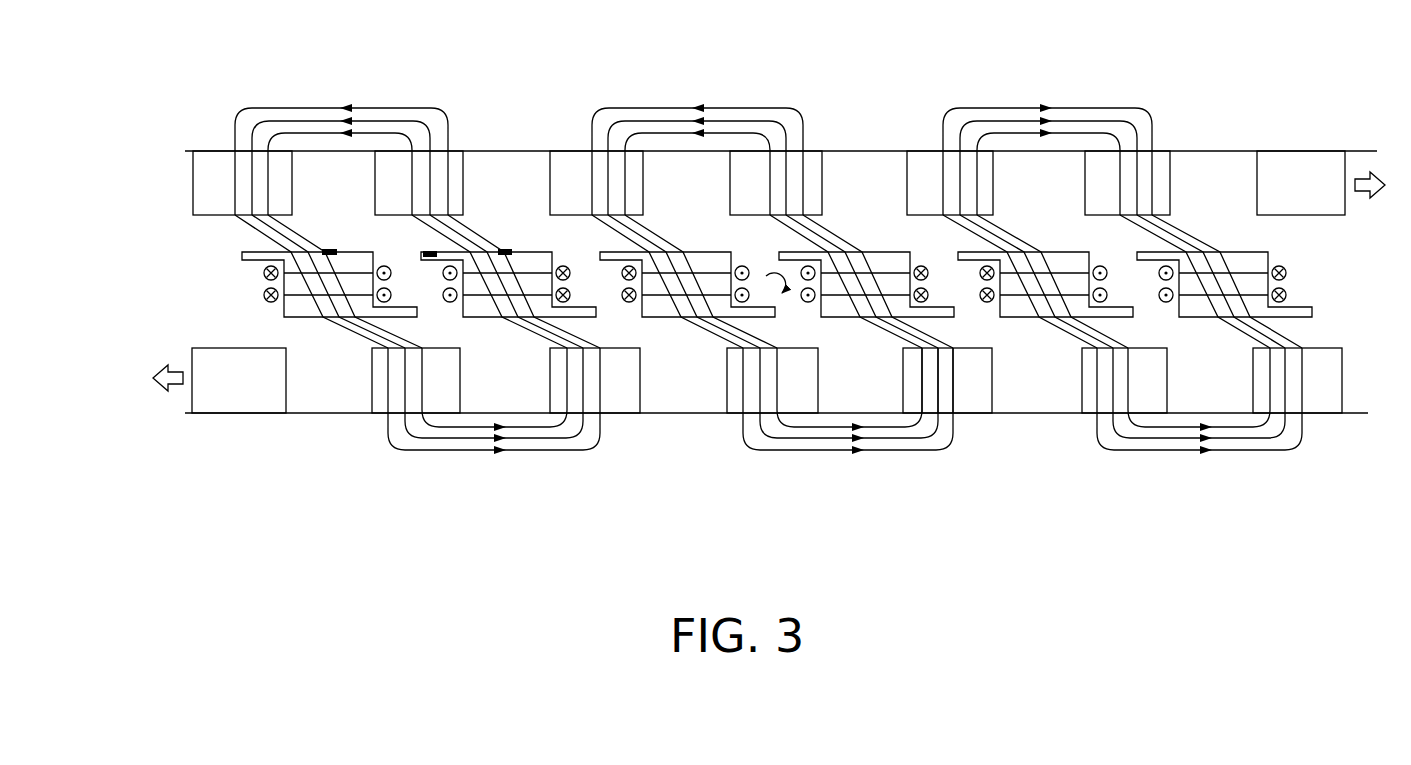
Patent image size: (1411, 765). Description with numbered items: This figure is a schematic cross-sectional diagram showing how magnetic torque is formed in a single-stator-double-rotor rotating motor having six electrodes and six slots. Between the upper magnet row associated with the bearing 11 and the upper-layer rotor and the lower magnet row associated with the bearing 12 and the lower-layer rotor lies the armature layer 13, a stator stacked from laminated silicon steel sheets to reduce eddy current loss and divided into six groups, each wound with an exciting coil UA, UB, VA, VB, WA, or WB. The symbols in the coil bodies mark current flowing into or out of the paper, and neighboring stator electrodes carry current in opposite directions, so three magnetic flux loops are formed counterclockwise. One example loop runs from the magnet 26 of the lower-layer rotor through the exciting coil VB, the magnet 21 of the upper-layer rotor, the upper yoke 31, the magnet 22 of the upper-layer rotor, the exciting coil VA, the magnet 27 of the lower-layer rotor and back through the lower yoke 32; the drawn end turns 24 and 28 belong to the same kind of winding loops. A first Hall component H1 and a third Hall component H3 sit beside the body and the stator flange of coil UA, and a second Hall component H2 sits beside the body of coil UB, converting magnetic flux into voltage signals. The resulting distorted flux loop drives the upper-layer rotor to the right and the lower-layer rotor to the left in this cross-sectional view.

The bearing 11 is at (158, 153).
The bearing 12 is at (147, 348).
The armature layer 13 is at (232, 240).
The magnet 21 is at (815, 133).
The magnet 22 is at (565, 140).
The coil end turn 24 is at (1082, 426).
The magnet 26 is at (977, 428).
The magnet 27 is at (735, 425).
The coil end turn 28 is at (460, 137).
The upper yoke 31 is at (683, 100).
The lower yoke 32 is at (856, 452).
The first Hall component H1 is at (339, 240).
The second Hall component H2 is at (516, 240).
The third Hall component H3 is at (417, 241).
The exciting coil UA is at (329, 301).
The exciting coil UB is at (508, 301).
The exciting coil VA is at (687, 301).
The exciting coil VB is at (866, 301).
The exciting coil WA is at (1045, 301).
The exciting coil WB is at (1224, 301).